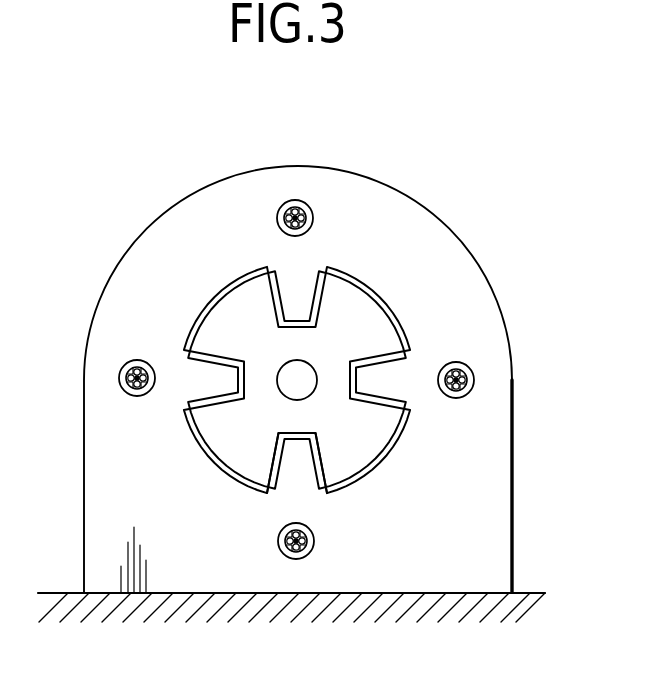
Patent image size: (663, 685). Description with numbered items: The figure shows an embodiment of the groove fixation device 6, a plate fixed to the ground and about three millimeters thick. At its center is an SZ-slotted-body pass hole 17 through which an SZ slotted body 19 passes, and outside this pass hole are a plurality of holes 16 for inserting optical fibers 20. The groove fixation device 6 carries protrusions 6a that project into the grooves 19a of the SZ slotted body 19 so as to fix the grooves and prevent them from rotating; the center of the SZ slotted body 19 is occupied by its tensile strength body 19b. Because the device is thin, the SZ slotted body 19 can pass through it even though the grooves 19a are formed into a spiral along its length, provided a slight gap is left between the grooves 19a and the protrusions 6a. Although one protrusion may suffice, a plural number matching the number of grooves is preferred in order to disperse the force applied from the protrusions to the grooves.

The groove fixation device 6 is at (496, 525).
The protrusions 6a is at (293, 481).
The holes 16 is at (474, 379).
The SZ-slotted-body pass hole 17 is at (385, 303).
The SZ slotted body 19 is at (398, 420).
The grooves 19a is at (248, 473).
The tensile strength body 19b is at (302, 378).
The optical fibers 20 is at (294, 200).